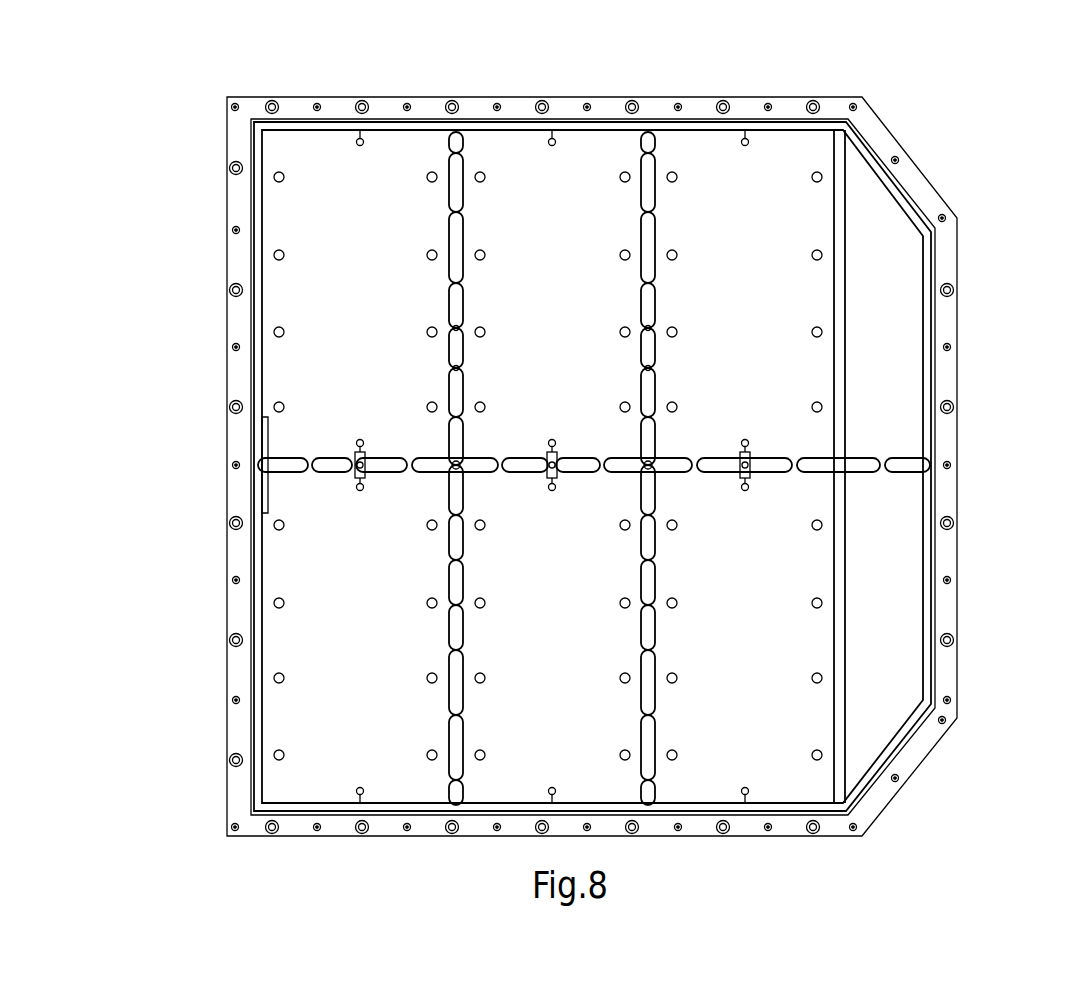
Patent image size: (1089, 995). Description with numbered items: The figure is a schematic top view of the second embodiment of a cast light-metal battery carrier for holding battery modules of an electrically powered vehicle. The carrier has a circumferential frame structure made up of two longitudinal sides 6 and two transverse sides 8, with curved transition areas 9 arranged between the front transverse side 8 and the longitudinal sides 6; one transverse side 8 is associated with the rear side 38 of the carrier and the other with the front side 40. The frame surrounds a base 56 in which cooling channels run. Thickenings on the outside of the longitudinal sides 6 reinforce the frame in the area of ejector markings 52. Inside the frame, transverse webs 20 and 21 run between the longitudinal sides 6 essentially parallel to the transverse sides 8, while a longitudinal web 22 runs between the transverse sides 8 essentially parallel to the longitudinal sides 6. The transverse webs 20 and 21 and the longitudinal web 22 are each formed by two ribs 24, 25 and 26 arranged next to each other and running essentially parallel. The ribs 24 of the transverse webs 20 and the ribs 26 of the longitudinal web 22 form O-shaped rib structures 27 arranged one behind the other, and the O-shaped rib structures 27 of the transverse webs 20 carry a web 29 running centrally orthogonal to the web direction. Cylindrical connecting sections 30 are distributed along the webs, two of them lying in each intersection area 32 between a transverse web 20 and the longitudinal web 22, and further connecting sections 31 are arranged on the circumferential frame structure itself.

The longitudinal side 6 is at (601, 92).
The transverse side 8 is at (208, 370).
The transition area 9 is at (940, 136).
The transverse web 20 is at (486, 222).
The transverse web 21 is at (809, 656).
The longitudinal web 22 is at (797, 447).
The rib 24 is at (450, 300).
The rib 25 is at (846, 285).
The rib 26 is at (331, 456).
The O-shaped rib structure 27 is at (477, 637).
The web 29 is at (463, 388).
The connecting section 30 is at (555, 481).
The connecting section 31 is at (362, 823).
The intersection area 32 is at (436, 447).
The rear side 38 is at (208, 543).
The front side 40 is at (992, 607).
The ejector marking 52 is at (317, 823).
The base 56 is at (344, 168).